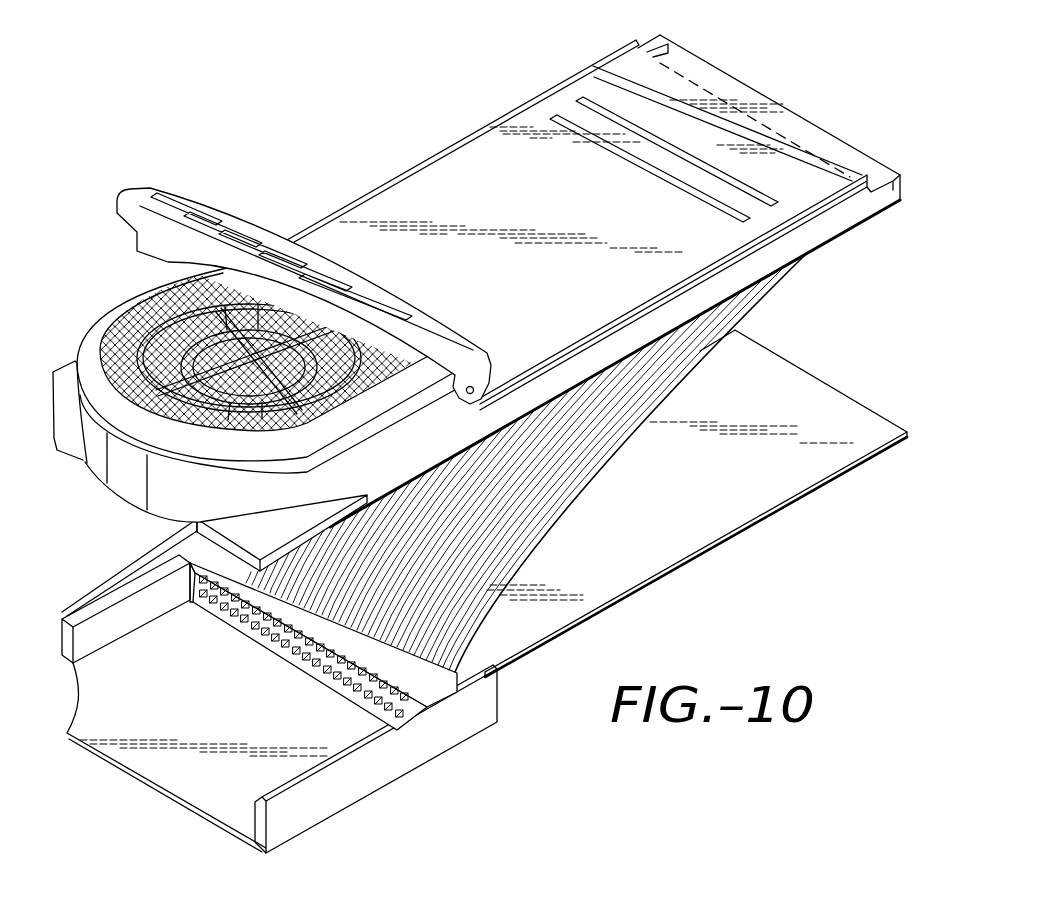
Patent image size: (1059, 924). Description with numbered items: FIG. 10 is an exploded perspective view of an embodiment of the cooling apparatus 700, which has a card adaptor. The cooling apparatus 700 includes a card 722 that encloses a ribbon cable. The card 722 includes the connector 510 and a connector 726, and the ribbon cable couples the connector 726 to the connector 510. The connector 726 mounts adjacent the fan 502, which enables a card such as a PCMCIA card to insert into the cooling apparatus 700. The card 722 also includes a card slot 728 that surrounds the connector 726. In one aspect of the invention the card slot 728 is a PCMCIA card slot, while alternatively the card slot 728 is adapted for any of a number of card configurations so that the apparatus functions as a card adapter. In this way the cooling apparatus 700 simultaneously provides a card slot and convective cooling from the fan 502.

The cooling apparatus 700 is at (507, 62).
The connector 510 is at (766, 97).
The fan 502 is at (173, 353).
The card 722 is at (837, 219).
The connector 726 is at (428, 683).
The card slot 728 is at (347, 793).